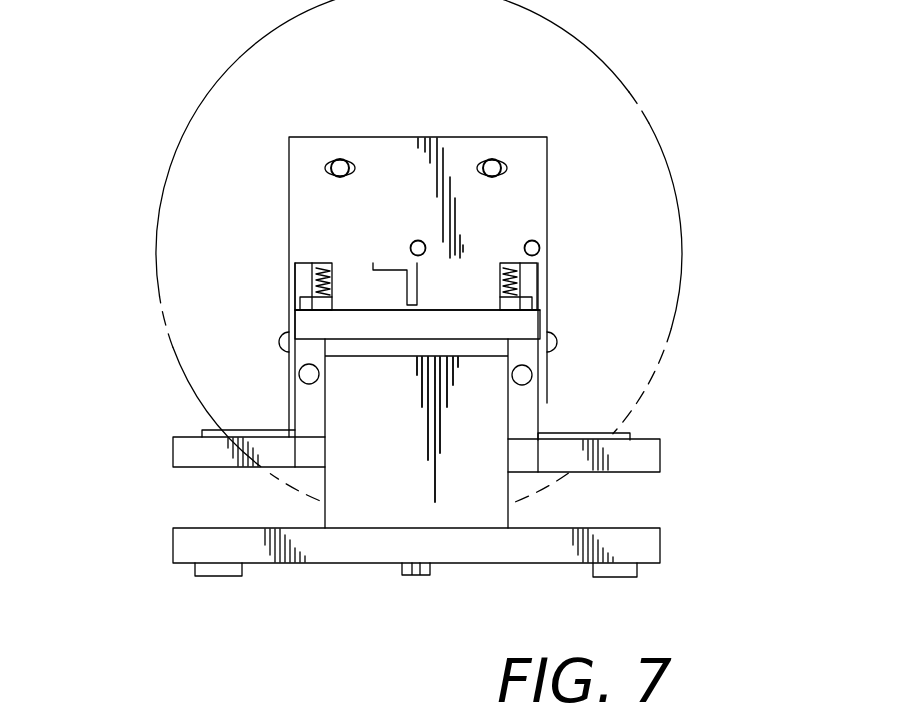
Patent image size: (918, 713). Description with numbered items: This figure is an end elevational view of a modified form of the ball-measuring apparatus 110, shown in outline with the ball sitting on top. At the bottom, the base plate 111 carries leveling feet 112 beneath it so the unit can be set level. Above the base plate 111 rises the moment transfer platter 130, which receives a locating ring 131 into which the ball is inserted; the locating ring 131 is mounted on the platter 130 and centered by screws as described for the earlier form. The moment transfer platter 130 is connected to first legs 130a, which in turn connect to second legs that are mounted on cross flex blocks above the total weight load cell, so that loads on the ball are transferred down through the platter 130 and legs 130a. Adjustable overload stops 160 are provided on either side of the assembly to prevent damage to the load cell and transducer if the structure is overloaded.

The tape cartridge / reel assembly 110 is at (158, 120).
The base plate 111 is at (173, 547).
The leveling feet 112 is at (220, 574).
The moment transfer platter 130 is at (172, 450).
The first legs 130a is at (309, 394).
The locating ring 131 is at (228, 430).
The adjustable overload stops 160 is at (292, 278).